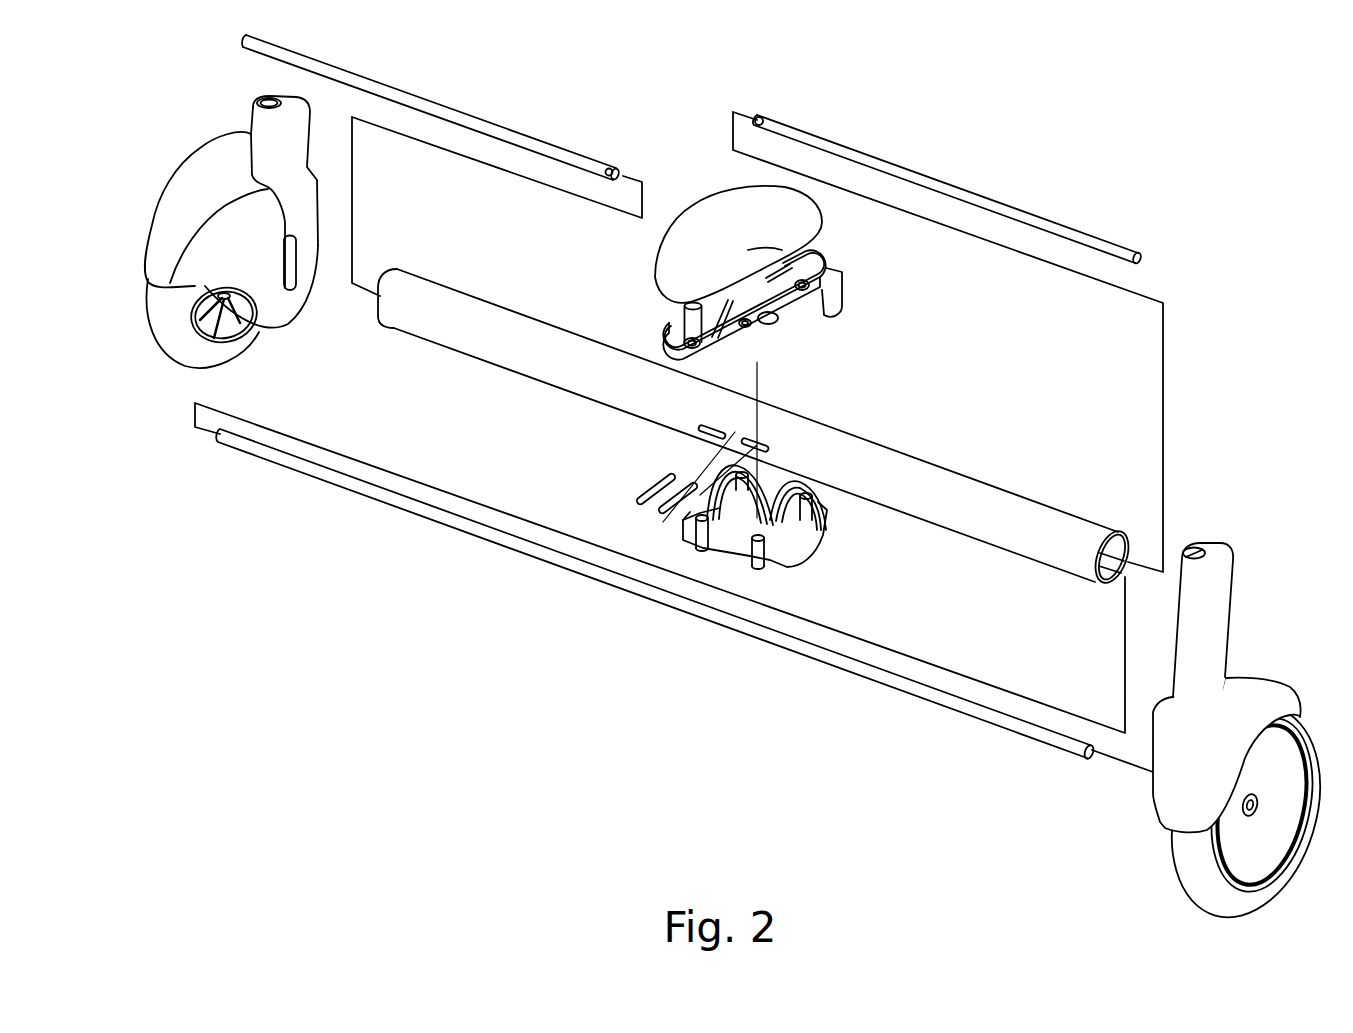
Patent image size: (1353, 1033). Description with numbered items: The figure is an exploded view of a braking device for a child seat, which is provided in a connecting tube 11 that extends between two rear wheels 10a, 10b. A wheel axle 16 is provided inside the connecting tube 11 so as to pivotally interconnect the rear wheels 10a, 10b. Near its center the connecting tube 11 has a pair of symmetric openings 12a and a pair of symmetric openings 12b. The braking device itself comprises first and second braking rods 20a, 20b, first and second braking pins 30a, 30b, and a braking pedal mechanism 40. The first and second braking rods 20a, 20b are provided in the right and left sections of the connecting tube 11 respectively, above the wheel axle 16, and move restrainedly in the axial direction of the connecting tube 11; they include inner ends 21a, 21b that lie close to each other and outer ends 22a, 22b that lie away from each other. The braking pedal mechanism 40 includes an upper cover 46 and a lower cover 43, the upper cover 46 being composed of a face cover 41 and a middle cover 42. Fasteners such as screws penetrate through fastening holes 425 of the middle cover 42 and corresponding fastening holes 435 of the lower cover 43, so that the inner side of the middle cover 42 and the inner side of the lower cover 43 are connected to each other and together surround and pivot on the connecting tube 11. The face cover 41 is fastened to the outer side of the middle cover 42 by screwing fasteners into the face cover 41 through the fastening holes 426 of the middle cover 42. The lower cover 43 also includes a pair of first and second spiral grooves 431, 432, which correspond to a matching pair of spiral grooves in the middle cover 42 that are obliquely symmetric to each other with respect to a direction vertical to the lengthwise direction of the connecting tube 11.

The rear wheel 10a is at (1172, 862).
The rear wheel 10b is at (173, 347).
The connecting tube 11 is at (500, 307).
The symmetric opening 12a is at (764, 441).
The symmetric opening 12b is at (698, 430).
The wheel axle 16 is at (750, 623).
The first braking rod 20a is at (964, 171).
The second braking rod 20b is at (404, 107).
The inner end 21a is at (763, 116).
The inner end 21b is at (614, 169).
The outer end 22a is at (1142, 250).
The outer end 22b is at (246, 42).
The first braking pin 30a is at (662, 512).
The second braking pin 30b is at (650, 490).
The braking pedal mechanism 40 is at (812, 299).
The face cover 41 is at (797, 220).
The middle cover 42 is at (736, 304).
The lower cover 43 is at (777, 499).
The upper cover 46 is at (759, 273).
The fastening holes 425 is at (672, 310).
The fastening holes 426 is at (662, 334).
The first spiral groove 431 is at (812, 550).
The second spiral groove 432 is at (688, 512).
The fastening holes 435 is at (750, 468).